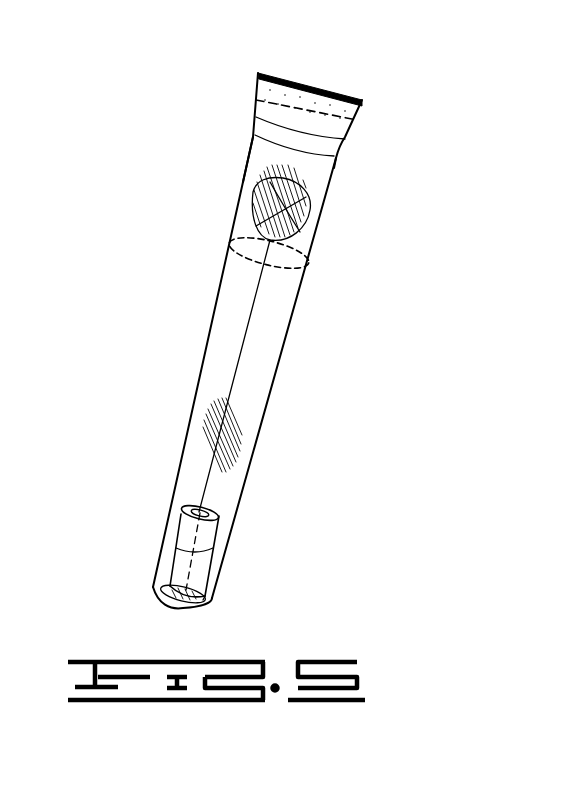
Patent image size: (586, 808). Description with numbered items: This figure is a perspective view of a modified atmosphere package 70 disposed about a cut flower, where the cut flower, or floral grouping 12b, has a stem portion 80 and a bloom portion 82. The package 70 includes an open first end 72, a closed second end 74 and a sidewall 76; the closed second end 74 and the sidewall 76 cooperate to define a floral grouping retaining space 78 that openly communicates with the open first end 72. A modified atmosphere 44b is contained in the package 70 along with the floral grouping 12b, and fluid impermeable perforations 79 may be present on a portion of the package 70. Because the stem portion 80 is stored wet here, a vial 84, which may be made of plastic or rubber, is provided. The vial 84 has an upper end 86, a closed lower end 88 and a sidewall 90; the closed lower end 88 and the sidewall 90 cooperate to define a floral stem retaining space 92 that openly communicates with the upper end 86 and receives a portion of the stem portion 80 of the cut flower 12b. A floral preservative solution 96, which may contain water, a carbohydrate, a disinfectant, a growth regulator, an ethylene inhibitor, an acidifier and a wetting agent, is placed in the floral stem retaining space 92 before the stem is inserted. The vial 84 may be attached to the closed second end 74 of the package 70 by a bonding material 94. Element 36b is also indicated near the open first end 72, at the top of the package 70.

The modified atmosphere package 70 is at (160, 93).
The open first end 72 is at (328, 92).
The cap closure line 36b is at (355, 121).
The floral grouping 12b is at (265, 190).
The bloom portion 82 is at (312, 228).
The fluid impermeable perforations 79 is at (240, 262).
The floral grouping retaining space 78 is at (235, 323).
The sidewall 76 is at (277, 364).
The modified atmosphere 44b is at (252, 372).
The stem portion 80 is at (190, 462).
The floral stem retaining space 92 is at (190, 500).
The upper end 86 is at (222, 506).
The vial 84 is at (212, 530).
The sidewall 90 is at (173, 547).
The floral preservative solution 96 is at (205, 565).
The closed lower end 88 is at (160, 597).
The bonding material 94 is at (198, 595).
The closed second end 74 is at (192, 606).